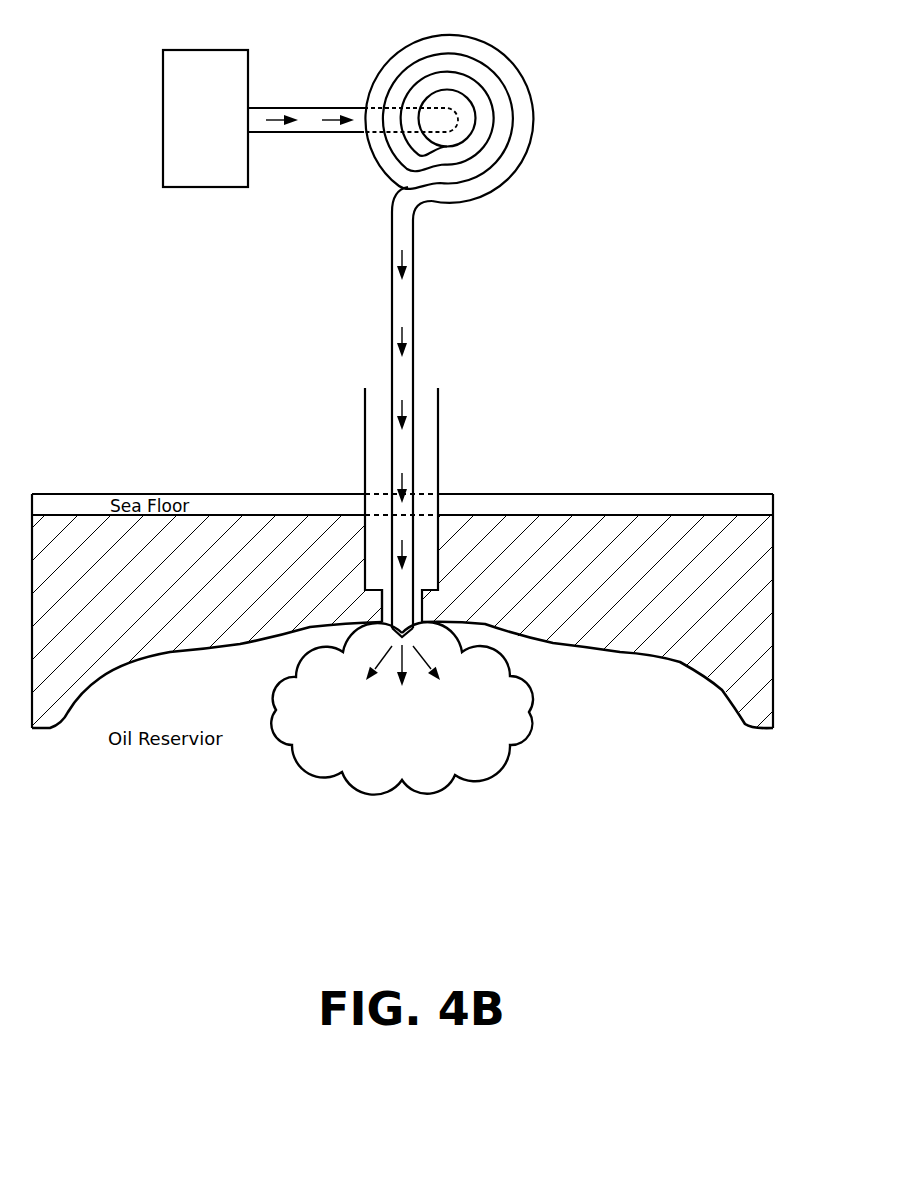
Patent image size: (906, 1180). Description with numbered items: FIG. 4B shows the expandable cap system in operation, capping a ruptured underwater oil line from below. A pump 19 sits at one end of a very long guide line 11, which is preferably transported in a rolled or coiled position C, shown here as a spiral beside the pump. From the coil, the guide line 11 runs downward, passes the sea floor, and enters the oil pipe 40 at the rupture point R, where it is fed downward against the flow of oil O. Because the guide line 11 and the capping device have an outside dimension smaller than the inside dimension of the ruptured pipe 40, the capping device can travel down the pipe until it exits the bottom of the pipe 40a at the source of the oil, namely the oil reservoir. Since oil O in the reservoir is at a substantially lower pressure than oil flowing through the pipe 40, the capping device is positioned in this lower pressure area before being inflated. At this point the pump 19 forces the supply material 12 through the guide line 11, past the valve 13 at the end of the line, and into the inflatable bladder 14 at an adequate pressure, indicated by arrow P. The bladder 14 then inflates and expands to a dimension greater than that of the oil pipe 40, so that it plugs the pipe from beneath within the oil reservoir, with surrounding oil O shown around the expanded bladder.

The pump 19 is at (192, 136).
The guide line 11 is at (278, 108).
The supply material 12 is at (309, 120).
The rolled/coiled position C is at (515, 50).
The arrow indicating pressure P is at (392, 288).
The rupture point R is at (376, 383).
The oil pipe 40 is at (439, 476).
The bottom of the pipe 40a is at (384, 616).
The valve 13 is at (400, 630).
The inflatable bladder 14 is at (531, 690).
The oil O is at (325, 794).